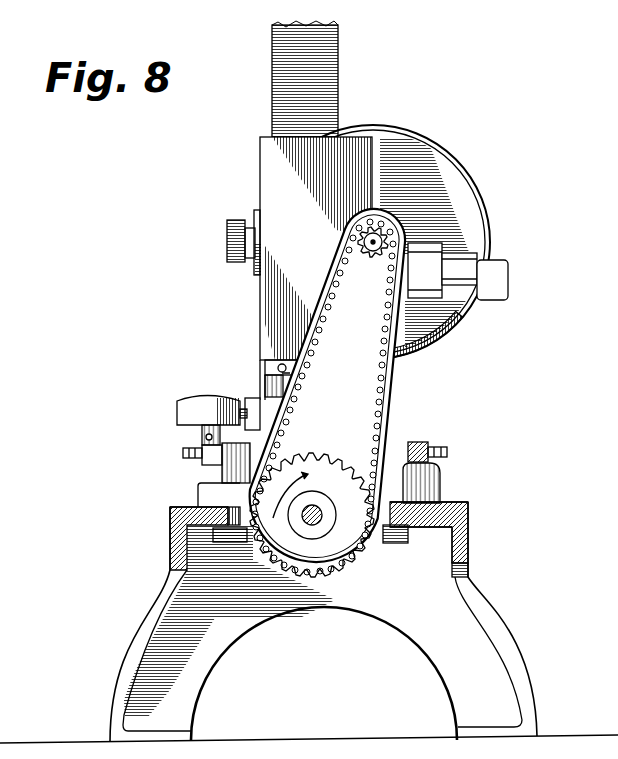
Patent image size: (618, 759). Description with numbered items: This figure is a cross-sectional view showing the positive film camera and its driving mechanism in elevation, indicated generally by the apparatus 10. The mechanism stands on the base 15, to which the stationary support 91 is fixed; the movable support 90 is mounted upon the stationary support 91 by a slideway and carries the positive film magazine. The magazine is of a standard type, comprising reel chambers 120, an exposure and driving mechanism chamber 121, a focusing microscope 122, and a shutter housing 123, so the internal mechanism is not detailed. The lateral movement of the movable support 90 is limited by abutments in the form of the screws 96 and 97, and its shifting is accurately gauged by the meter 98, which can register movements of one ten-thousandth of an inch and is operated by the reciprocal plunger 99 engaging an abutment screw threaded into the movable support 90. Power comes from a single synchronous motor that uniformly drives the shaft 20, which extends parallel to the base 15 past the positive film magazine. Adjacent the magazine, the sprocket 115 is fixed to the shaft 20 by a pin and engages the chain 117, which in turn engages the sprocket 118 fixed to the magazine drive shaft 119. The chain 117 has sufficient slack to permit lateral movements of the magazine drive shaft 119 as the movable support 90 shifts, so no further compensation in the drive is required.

The machine 10 is at (277, 752).
The base 15 is at (468, 513).
The shaft 20 is at (312, 526).
The movable support 90 is at (262, 392).
The stationary support 91 is at (440, 477).
The screw 96 is at (183, 453).
The screw 97 is at (447, 447).
The meter 98 is at (178, 405).
The reciprocal plunger 99 is at (240, 403).
The sprocket 115 is at (338, 580).
The chain 117 is at (337, 553).
The sprocket 118 is at (403, 247).
The magazine drive shaft 119 is at (377, 239).
The reel chambers 120 is at (334, 79).
The exposure and driving mechanism chamber 121 is at (272, 163).
The focusing microscope 122 is at (231, 264).
The shutter housing 123 is at (472, 224).